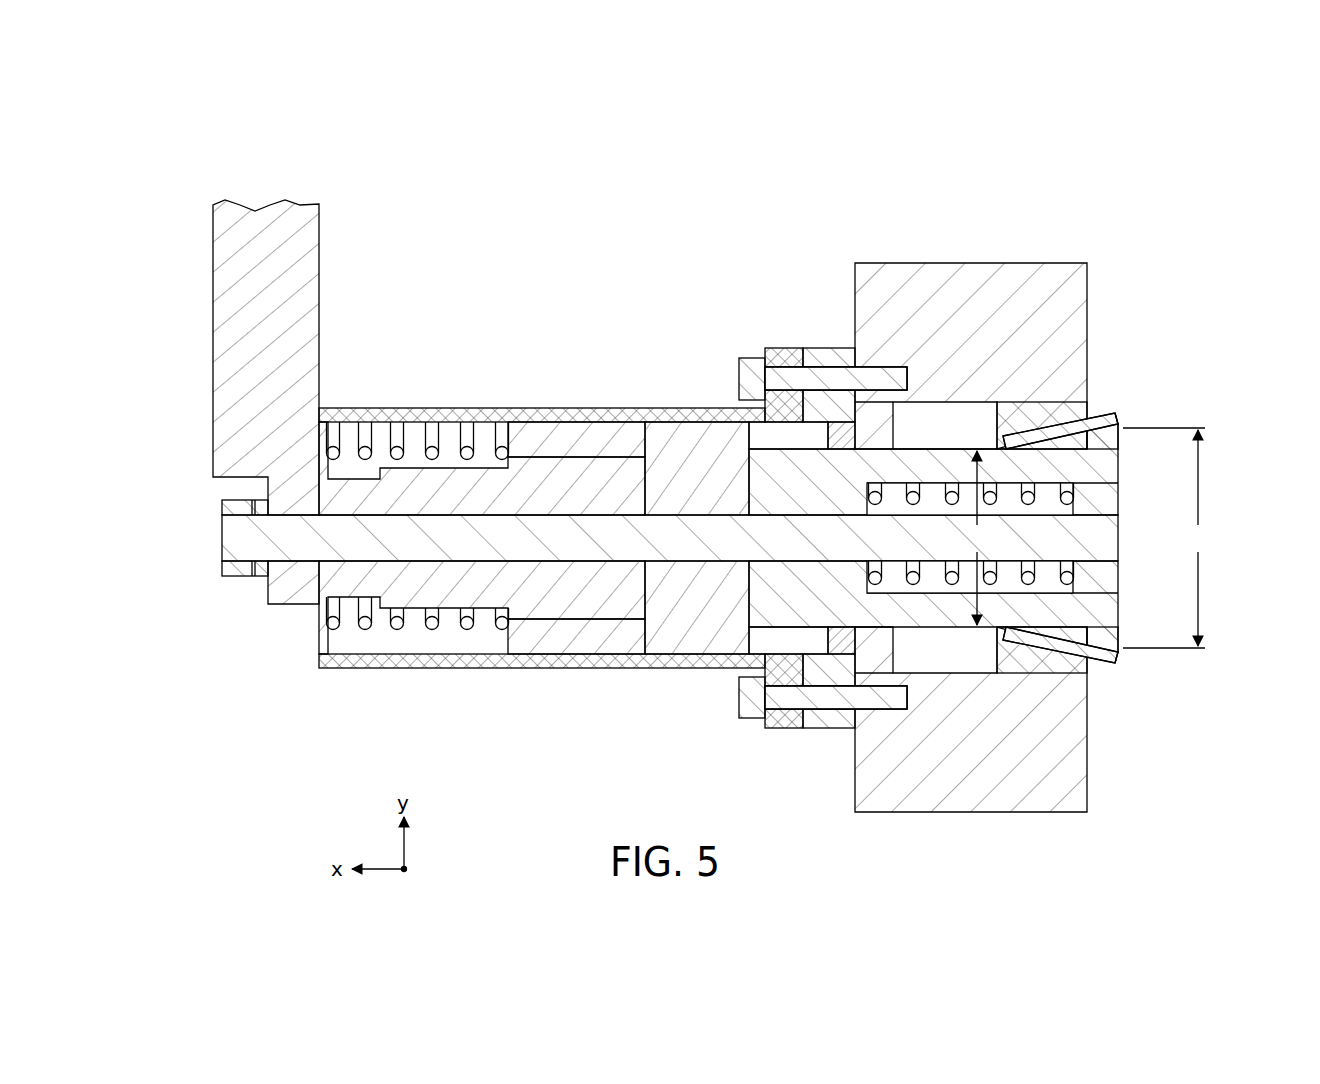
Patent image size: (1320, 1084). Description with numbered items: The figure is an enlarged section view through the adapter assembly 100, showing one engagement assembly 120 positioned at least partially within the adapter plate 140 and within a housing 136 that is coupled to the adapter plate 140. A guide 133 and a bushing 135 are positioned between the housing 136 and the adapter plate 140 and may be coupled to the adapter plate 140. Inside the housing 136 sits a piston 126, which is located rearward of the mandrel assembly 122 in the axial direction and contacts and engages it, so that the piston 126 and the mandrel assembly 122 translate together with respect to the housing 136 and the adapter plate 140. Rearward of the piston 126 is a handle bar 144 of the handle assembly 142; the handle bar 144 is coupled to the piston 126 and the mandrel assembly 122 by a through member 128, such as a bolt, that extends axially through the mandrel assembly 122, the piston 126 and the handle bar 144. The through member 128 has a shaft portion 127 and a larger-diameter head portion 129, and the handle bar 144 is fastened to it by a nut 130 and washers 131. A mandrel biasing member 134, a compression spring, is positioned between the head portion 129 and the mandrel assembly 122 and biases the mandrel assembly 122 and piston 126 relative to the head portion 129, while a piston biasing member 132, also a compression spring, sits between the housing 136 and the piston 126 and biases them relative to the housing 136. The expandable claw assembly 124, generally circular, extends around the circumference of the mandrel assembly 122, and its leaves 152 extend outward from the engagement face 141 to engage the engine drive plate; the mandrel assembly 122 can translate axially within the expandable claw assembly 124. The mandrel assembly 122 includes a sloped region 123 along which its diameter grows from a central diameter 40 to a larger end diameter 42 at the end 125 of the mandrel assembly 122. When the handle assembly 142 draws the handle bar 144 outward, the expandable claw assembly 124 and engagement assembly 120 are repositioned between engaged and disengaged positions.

The adapter assembly 100 is at (702, 452).
The adapter plate 140 is at (999, 499).
The engagement face 141 is at (1087, 322).
The expandable claw assembly 124 is at (1116, 675).
The sloped region 123 is at (1050, 432).
The leaves 152 is at (1117, 420).
The mandrel assembly 122 is at (962, 447).
The engagement assembly 120 is at (1146, 474).
The end of the mandrel assembly 125 is at (925, 449).
The head portion 129 is at (1098, 563).
The mandrel biasing member 134 is at (924, 590).
The bushing 135 is at (837, 443).
The guide 133 is at (825, 357).
The piston 126 is at (696, 440).
The shaft portion 127 is at (590, 530).
The through member 128 is at (288, 552).
The nut 130 is at (235, 568).
The washer 131 is at (258, 508).
The piston biasing member 132 is at (397, 445).
The housing 136 is at (465, 417).
The handle assembly 142 is at (237, 348).
The handle bar 144 is at (226, 292).
The central diameter 40 is at (976, 538).
The end diameter 42 is at (1167, 538).